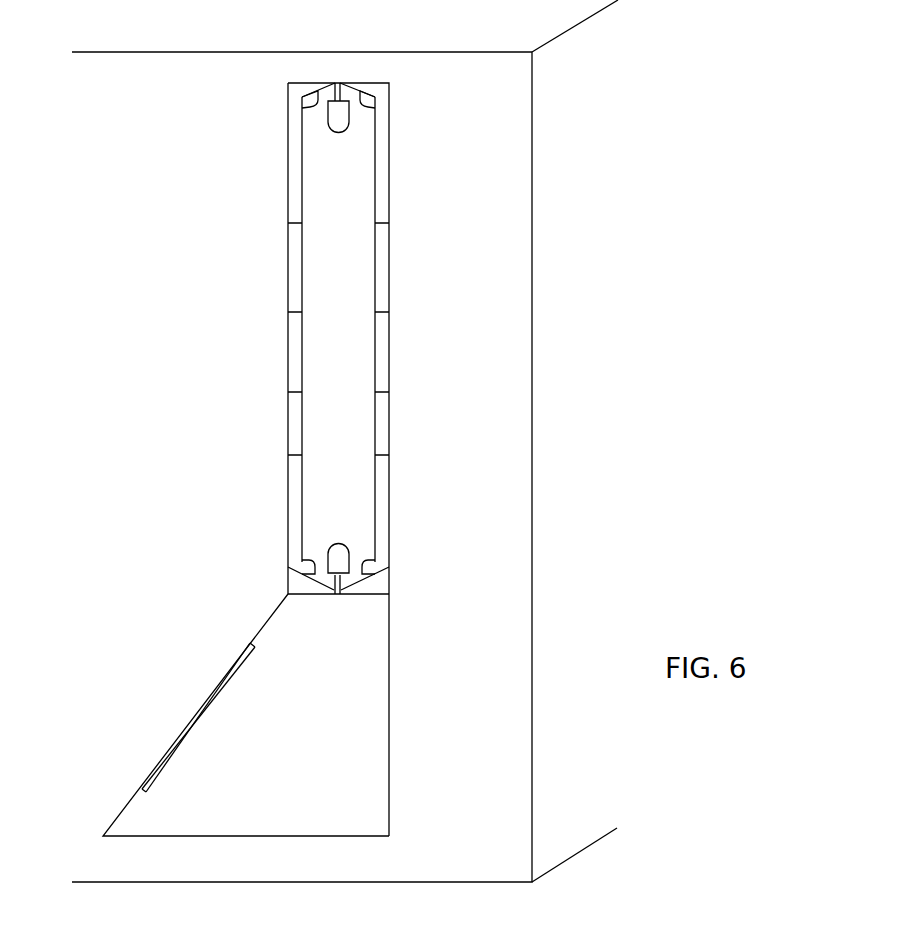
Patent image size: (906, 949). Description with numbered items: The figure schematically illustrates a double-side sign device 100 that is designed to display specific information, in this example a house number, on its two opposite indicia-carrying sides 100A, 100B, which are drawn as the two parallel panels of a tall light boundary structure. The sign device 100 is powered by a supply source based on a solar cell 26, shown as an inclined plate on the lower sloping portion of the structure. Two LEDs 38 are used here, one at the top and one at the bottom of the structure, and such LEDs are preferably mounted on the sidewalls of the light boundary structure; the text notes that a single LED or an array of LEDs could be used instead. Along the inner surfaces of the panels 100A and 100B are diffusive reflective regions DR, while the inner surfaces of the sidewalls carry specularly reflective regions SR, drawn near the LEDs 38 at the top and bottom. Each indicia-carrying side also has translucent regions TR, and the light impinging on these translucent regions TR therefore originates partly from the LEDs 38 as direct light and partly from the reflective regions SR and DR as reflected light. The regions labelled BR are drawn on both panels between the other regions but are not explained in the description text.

The sign device 100 is at (118, 235).
The indicia area carrying side 100A is at (288, 83).
The indicia area carrying side 100B is at (389, 83).
The LED 38 is at (327, 118).
The solar cell 26 is at (192, 727).
The specularly reflective region SR is at (307, 111).
The diffusive reflective region DR is at (302, 147).
The bottom region sensor BR is at (288, 209).
The translucent region TR is at (300, 272).